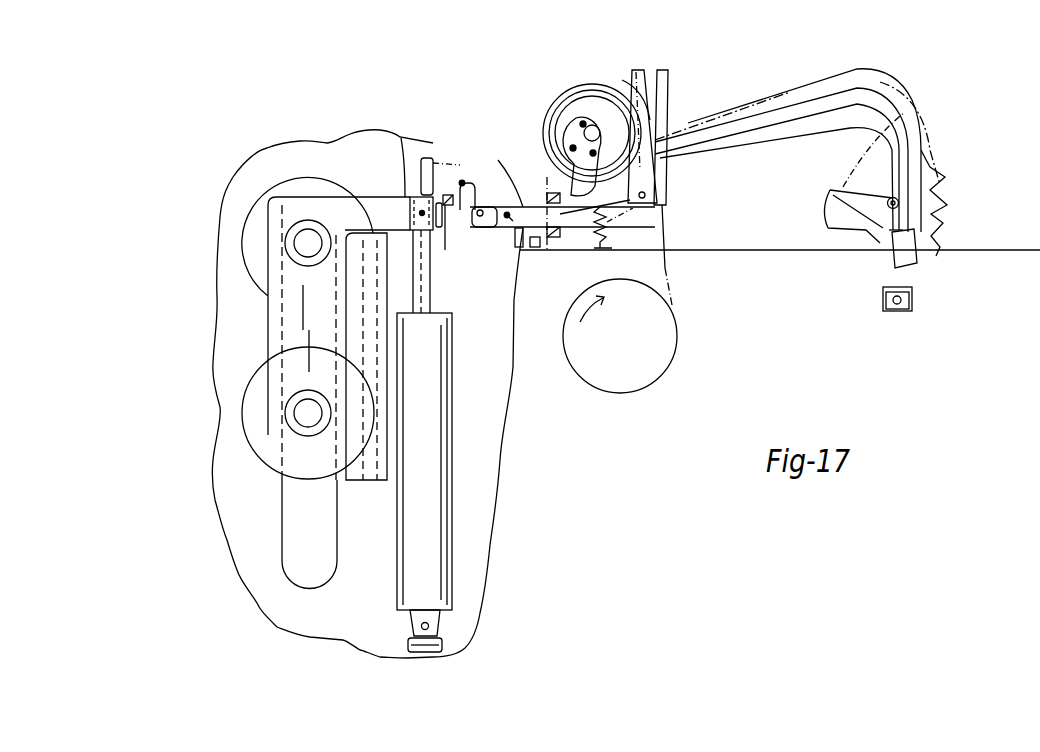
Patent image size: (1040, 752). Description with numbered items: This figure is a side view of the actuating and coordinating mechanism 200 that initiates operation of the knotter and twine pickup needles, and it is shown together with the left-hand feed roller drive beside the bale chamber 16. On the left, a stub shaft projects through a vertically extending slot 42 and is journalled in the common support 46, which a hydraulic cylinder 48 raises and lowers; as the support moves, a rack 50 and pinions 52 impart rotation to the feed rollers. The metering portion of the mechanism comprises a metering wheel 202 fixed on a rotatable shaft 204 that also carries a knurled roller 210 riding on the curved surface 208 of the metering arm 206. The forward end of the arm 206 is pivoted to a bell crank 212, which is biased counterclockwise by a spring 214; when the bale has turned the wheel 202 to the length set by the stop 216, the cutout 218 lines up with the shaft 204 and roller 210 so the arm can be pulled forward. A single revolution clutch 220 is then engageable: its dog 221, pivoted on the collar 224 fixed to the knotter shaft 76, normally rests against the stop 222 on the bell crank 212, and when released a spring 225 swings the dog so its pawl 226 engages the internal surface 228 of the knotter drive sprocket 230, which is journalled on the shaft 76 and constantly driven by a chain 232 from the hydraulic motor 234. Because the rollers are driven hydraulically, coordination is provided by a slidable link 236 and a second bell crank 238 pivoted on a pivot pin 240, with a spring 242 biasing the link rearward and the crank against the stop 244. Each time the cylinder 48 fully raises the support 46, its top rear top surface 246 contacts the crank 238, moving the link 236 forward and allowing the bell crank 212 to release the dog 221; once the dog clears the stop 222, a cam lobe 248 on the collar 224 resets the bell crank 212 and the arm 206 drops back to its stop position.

The bale chamber 16 is at (737, 247).
The vertically extending slot 42 is at (293, 502).
The common support 46 is at (360, 213).
The hydraulic cylinder 48 is at (453, 420).
The rack 50 is at (400, 350).
The pinion 52 is at (247, 227).
The knotter shaft 76 is at (567, 112).
The actuating and coordinating mechanism 200 is at (843, 24).
The metering wheel 202 is at (947, 213).
The rotatable shaft 204 is at (888, 201).
The metering arm 206 is at (875, 95).
The curved surface 208 is at (890, 146).
The knurled roller 210 is at (857, 230).
The bell crank 212 is at (660, 110).
The spring 214 is at (608, 232).
The stop 216 is at (913, 291).
The cutout 218 is at (889, 251).
The single revolution clutch 220 is at (538, 139).
The dog 221 is at (567, 168).
The stop 222 is at (520, 185).
The collar 224 is at (571, 146).
The spring 225 is at (582, 122).
The pawl 226 is at (656, 177).
The internal surface 228 is at (622, 80).
The knotter drive sprocket 230 is at (595, 103).
The chain 232 is at (666, 268).
The hydraulic motor 234 is at (668, 347).
The slidable link 236 is at (507, 216).
The bell crank 238 is at (425, 156).
The pivot pin 240 is at (462, 181).
The spring 242 is at (510, 248).
The stop 244 is at (445, 250).
The top rear top surface 246 is at (402, 138).
The cam lobe 248 is at (577, 88).